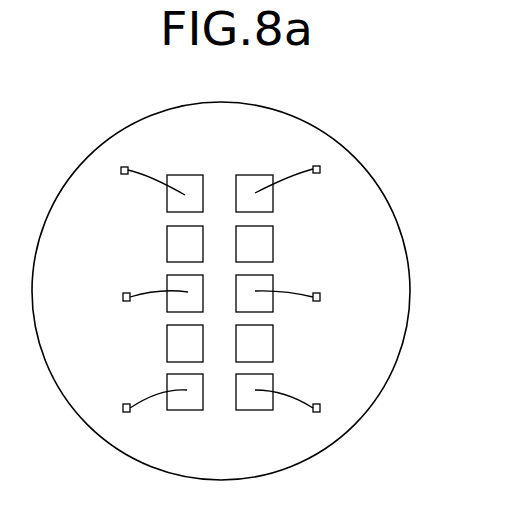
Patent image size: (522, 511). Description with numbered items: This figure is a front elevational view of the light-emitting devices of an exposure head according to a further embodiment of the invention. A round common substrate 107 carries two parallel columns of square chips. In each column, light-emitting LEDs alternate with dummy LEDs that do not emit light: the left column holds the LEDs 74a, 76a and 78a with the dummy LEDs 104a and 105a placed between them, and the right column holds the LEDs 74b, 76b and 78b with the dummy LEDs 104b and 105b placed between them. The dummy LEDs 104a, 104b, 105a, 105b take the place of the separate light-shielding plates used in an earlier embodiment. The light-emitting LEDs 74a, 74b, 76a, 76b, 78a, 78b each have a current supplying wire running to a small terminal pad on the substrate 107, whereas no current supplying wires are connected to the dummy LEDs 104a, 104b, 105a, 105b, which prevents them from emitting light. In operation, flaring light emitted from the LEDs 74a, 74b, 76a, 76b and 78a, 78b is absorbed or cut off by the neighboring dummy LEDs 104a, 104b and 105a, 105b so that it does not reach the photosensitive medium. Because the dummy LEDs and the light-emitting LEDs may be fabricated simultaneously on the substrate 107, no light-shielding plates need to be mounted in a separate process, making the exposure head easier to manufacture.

The substrate 107 is at (400, 268).
The LED 74a is at (187, 187).
The LED 74b is at (255, 185).
The dummy LED 104a is at (172, 247).
The dummy LED 104b is at (267, 247).
The LED 76a is at (188, 285).
The LED 76b is at (268, 283).
The dummy LED 105a is at (177, 344).
The dummy LED 105b is at (267, 347).
The LED 78a is at (182, 403).
The LED 78b is at (255, 402).